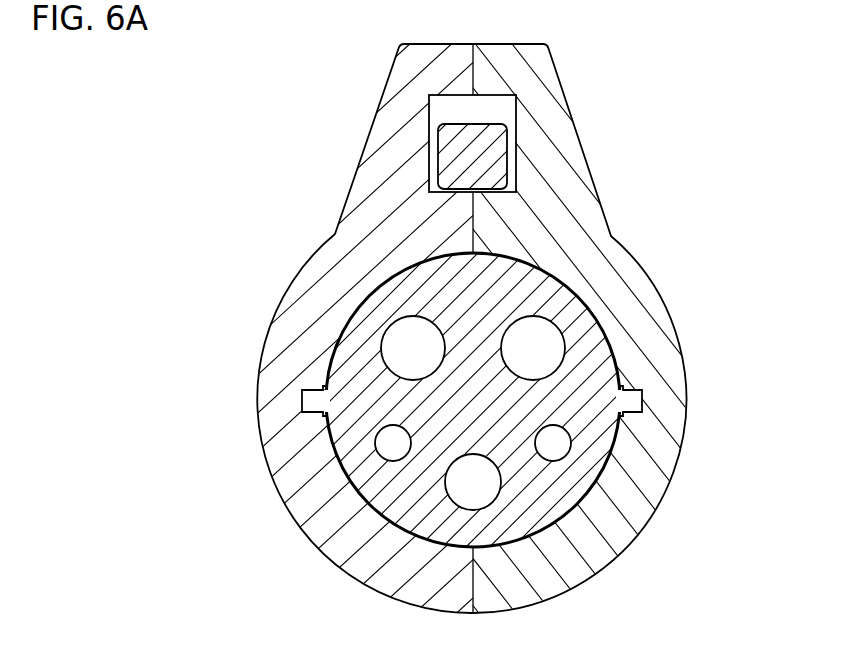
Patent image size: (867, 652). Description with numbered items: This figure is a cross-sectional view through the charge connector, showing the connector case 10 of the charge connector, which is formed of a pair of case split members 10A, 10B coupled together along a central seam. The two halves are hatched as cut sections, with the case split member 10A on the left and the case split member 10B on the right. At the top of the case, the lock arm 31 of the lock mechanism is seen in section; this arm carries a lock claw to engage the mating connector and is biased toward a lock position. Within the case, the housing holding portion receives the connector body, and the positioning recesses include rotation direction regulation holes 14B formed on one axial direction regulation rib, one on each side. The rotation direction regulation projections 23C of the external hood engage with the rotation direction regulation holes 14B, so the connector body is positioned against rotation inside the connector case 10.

The connector case 10 is at (433, 308).
The case split member 10A is at (397, 60).
The case split member 10B is at (487, 53).
The lock arm 31 is at (490, 152).
The rotation direction regulation hole 14B is at (316, 388).
The rotation direction regulation projection 23C is at (317, 402).